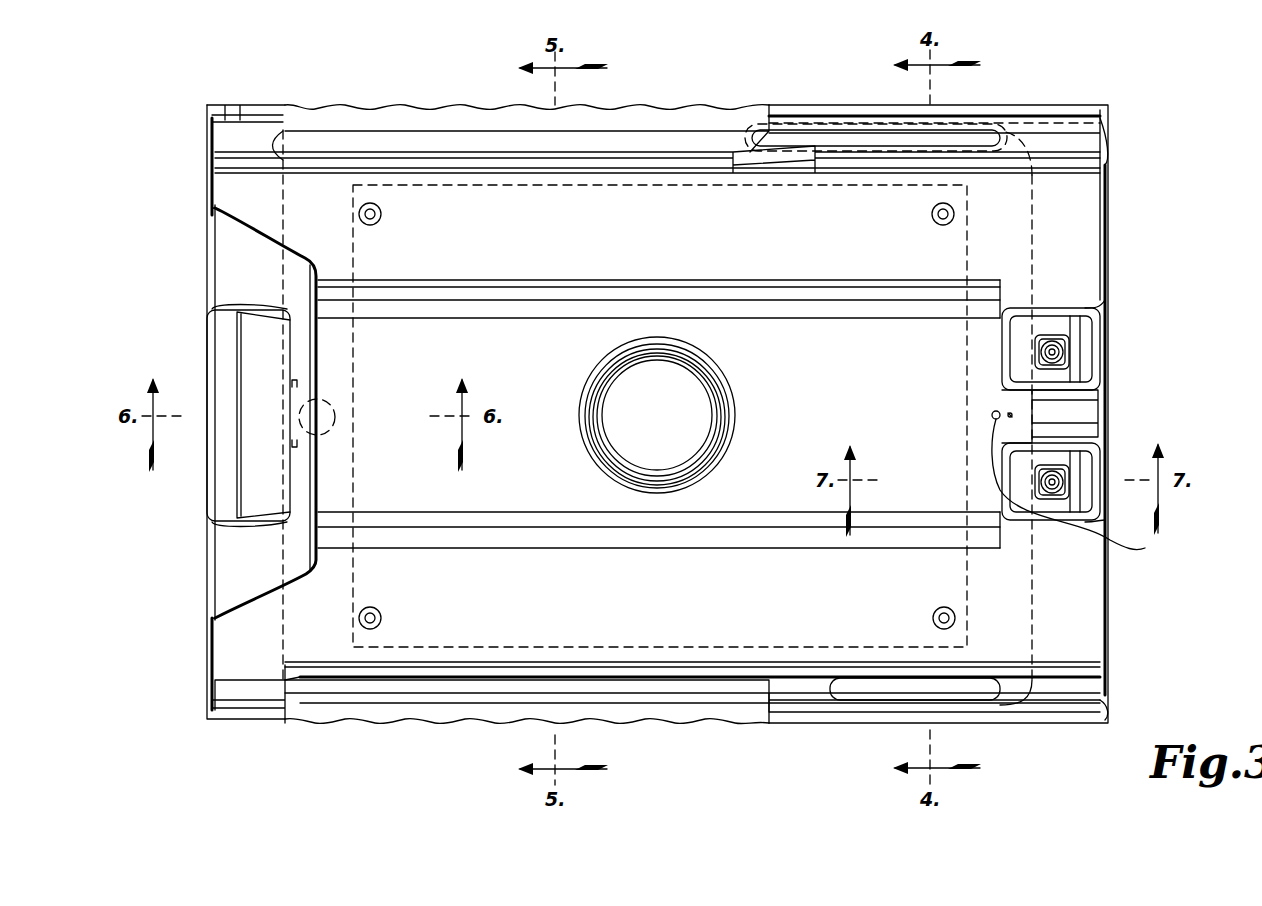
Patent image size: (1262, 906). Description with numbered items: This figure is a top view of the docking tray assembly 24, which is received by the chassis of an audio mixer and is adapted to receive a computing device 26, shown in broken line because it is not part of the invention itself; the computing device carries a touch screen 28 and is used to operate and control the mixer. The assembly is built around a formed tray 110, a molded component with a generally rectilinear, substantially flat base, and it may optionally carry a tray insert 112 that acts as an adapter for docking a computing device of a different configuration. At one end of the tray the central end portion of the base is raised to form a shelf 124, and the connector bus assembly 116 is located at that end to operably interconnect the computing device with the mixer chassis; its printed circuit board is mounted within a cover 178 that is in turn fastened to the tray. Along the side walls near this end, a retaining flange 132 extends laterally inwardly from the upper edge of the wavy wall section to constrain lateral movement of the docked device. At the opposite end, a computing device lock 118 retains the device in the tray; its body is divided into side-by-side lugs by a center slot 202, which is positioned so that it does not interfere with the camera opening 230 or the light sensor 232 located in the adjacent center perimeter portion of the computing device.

The docking tray assembly 24 is at (690, 98).
The computing device 26 is at (1040, 186).
The touch screen 28 is at (460, 218).
The tray 110 is at (335, 688).
The tray insert 112 is at (1074, 255).
The connector bus assembly 116 is at (205, 342).
The computing device lock 118 is at (1110, 342).
The shelf 124 is at (263, 260).
The retaining flange 132 is at (300, 725).
The cover 178 is at (228, 475).
The center slot 202 is at (1080, 408).
The camera opening 230 is at (1082, 490).
The light sensor 232 is at (1014, 415).